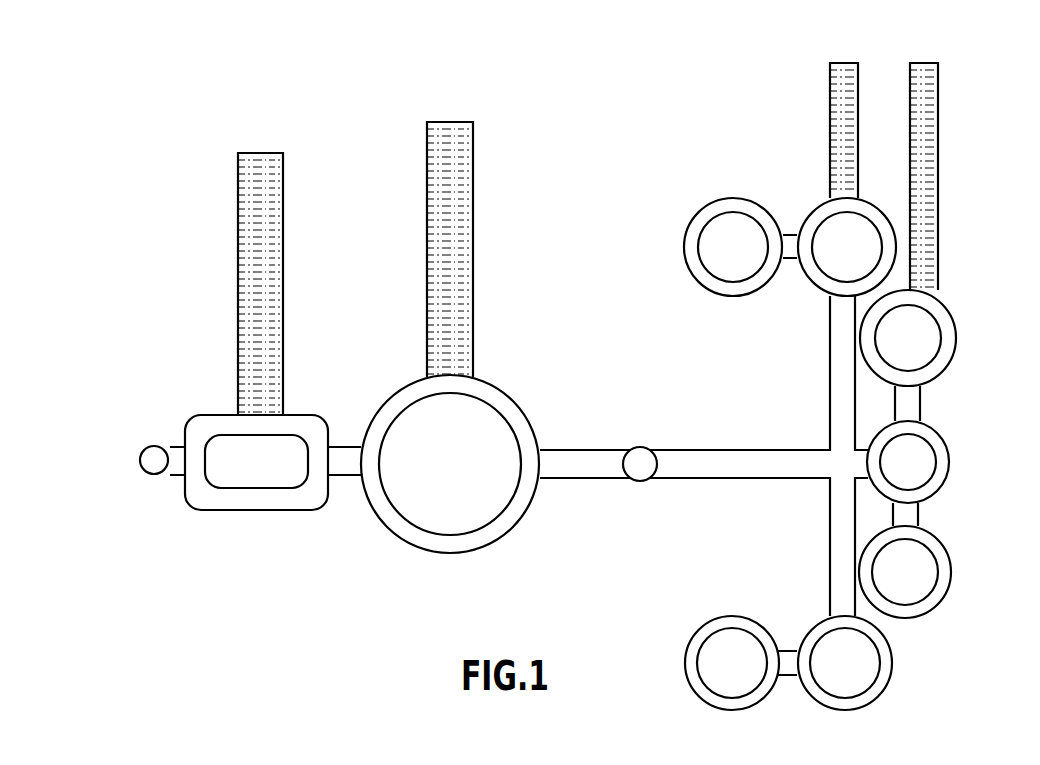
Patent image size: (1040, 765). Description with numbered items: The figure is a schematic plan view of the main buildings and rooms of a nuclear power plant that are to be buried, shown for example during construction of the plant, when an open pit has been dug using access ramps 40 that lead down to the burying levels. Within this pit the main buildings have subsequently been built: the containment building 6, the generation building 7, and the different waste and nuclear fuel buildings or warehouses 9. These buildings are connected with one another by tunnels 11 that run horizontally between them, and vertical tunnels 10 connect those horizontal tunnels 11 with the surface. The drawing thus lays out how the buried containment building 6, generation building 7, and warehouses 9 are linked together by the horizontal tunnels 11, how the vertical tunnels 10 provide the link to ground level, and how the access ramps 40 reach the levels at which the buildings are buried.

The containment building 6 is at (430, 495).
The generation building 7 is at (260, 478).
The waste and nuclear fuel buildings or warehouses 9 is at (818, 240).
The vertical tunnels 10 is at (154, 465).
The tunnels 11 is at (593, 468).
The access ramps 40 is at (448, 270).